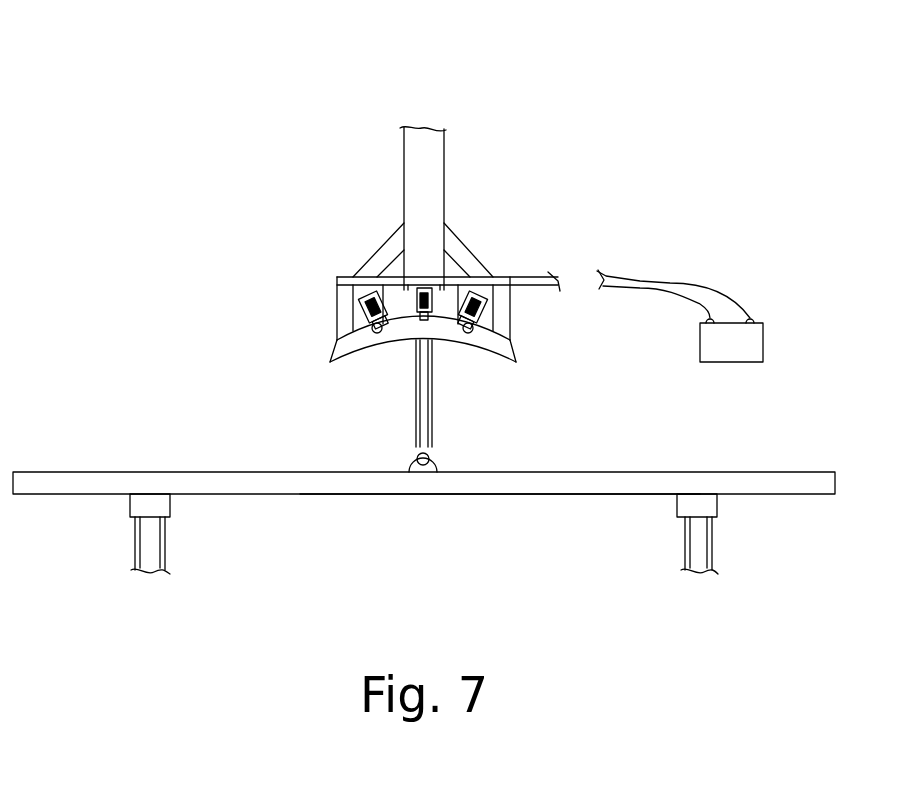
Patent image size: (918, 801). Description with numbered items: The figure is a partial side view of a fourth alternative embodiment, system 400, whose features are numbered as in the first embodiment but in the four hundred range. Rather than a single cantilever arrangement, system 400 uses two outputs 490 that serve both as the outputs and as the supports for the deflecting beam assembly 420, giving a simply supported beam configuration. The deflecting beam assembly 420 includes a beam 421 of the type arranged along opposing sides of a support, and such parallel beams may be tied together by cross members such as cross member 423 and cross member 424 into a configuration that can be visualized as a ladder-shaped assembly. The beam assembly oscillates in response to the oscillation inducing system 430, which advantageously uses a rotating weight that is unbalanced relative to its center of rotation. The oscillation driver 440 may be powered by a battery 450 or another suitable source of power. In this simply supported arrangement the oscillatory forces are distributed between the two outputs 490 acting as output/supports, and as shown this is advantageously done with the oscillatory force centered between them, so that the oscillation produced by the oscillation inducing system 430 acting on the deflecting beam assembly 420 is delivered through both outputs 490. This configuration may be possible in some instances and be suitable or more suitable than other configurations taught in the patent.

The system 400 is at (657, 93).
The oscillation driver 440 is at (340, 198).
The oscillation inducing system 430 is at (355, 397).
The cross member 424 is at (445, 455).
The battery 450 is at (700, 340).
The deflecting beam assembly 420 is at (375, 498).
The beam 421 is at (535, 495).
The cross member 423 is at (170, 497).
The output 490 is at (135, 541).